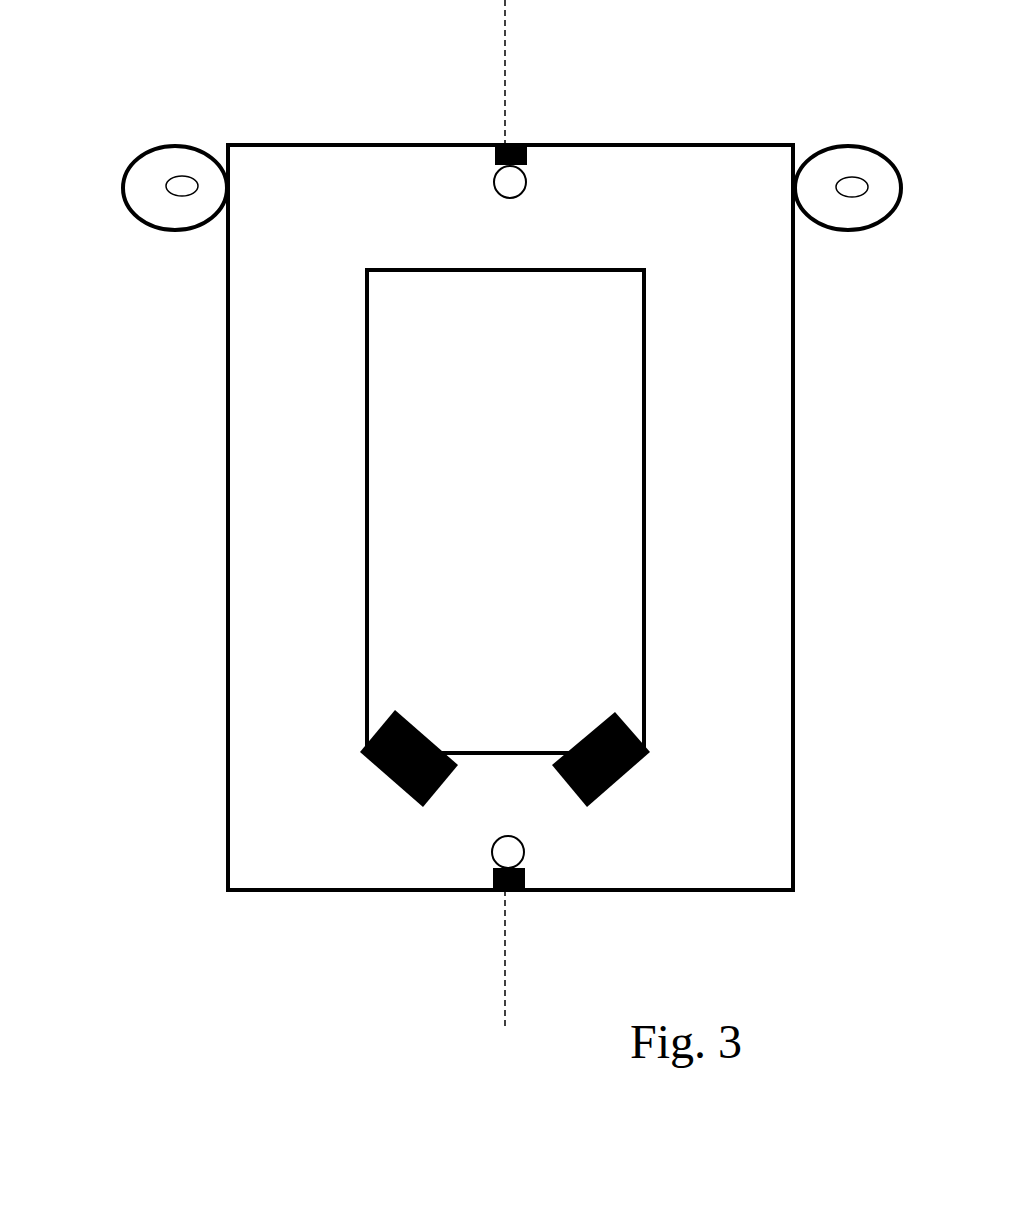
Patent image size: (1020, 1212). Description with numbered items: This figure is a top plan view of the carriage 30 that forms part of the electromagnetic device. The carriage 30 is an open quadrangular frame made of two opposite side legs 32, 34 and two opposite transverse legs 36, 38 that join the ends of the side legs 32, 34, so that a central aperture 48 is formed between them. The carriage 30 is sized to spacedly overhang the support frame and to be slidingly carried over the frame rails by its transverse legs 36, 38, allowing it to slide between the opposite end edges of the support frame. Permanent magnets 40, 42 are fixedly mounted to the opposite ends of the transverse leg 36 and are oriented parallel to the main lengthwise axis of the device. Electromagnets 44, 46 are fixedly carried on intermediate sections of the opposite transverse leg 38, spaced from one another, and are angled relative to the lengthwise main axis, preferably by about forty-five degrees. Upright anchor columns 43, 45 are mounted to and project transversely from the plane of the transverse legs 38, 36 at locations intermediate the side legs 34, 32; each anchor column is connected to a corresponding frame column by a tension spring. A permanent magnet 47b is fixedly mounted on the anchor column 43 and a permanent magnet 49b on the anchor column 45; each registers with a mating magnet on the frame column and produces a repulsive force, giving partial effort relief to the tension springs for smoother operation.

The carriage 30 is at (308, 188).
The side leg 32 is at (250, 397).
The side leg 34 is at (738, 482).
The transverse leg 36 is at (665, 197).
The transverse leg 38 is at (707, 817).
The permanent magnet 40 is at (125, 197).
The permanent magnet 42 is at (882, 222).
The upright anchor column 43 is at (525, 847).
The electromagnet 44 is at (363, 737).
The upright anchor column 45 is at (495, 177).
The electromagnet 46 is at (613, 713).
The permanent magnet 47b is at (493, 873).
The central aperture 48 is at (408, 543).
The permanent magnet 49b is at (523, 145).